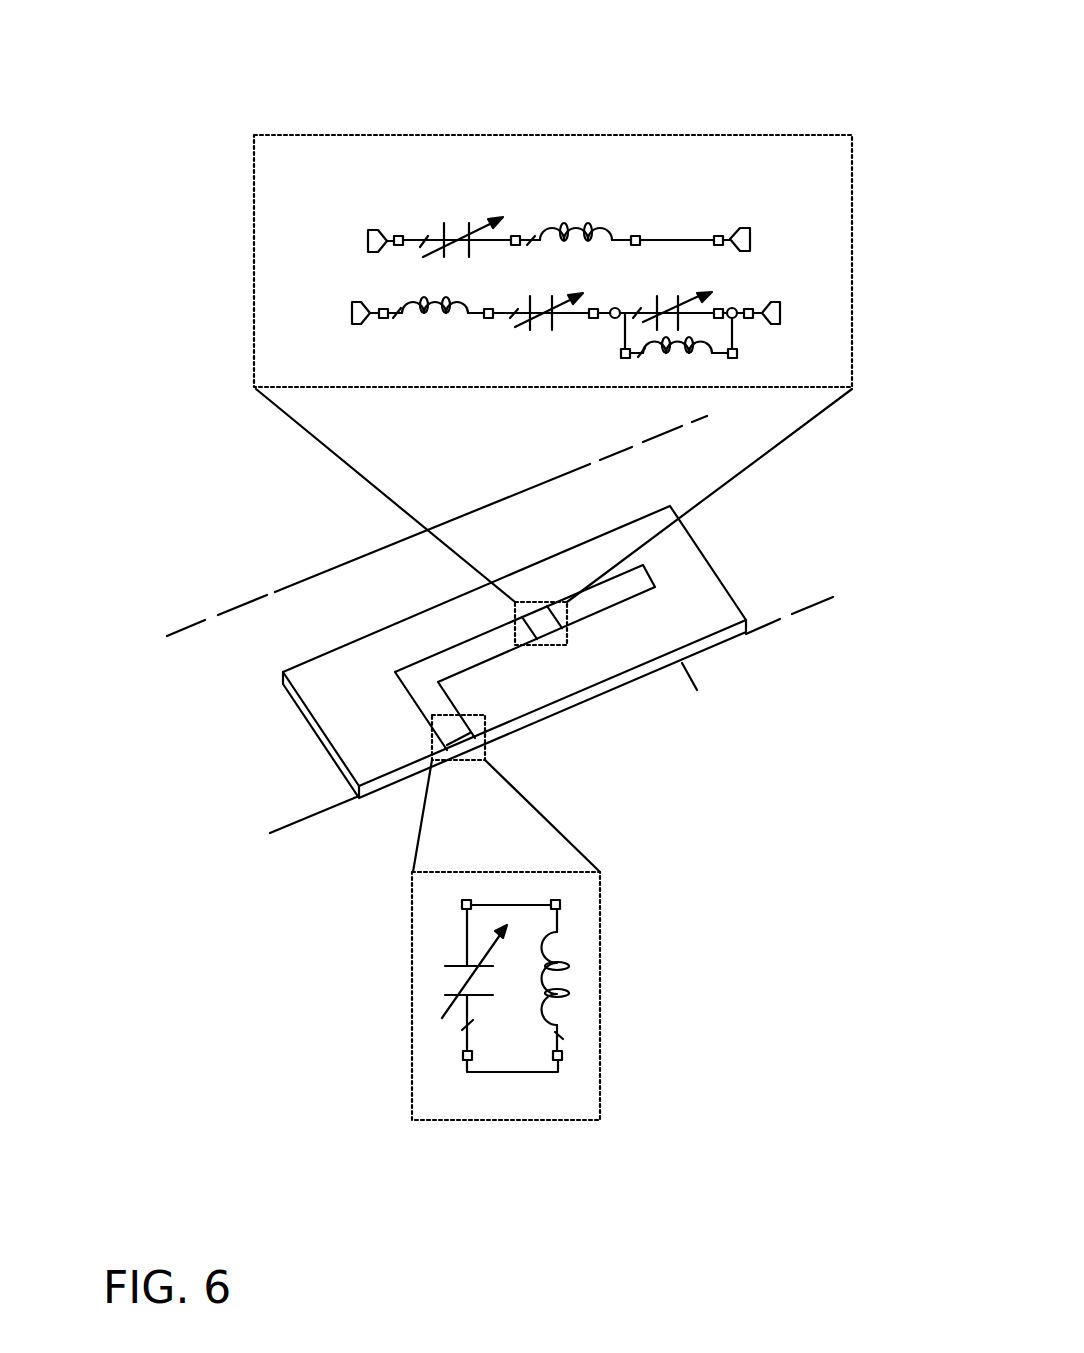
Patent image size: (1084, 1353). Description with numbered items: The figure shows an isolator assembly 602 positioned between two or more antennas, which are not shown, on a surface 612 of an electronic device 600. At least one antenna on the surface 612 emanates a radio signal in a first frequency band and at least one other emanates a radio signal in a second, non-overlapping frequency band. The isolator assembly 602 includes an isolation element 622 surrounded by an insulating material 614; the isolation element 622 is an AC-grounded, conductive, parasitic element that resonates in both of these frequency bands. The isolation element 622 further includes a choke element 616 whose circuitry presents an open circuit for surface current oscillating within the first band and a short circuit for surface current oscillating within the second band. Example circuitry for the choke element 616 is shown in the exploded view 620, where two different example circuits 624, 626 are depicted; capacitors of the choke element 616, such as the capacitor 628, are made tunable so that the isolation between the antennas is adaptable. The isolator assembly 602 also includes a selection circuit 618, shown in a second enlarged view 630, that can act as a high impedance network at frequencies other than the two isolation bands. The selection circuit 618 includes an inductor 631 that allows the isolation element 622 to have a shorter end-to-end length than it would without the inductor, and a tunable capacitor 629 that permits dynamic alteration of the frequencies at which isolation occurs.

The electronic device 600 is at (191, 36).
The isolator assembly 602 is at (404, 637).
The surface 612 is at (457, 510).
The insulating material 614 is at (337, 677).
The choke element 616 is at (545, 625).
The selection circuit 618 is at (485, 742).
The exploded view 620 is at (254, 313).
The isolation element 622 is at (487, 647).
The example circuit 624 is at (368, 240).
The example circuit 626 is at (352, 313).
The capacitor 628 is at (444, 224).
The tunable capacitor 629 is at (447, 963).
The tuning circuit 630 is at (412, 988).
The inductor 631 is at (573, 970).